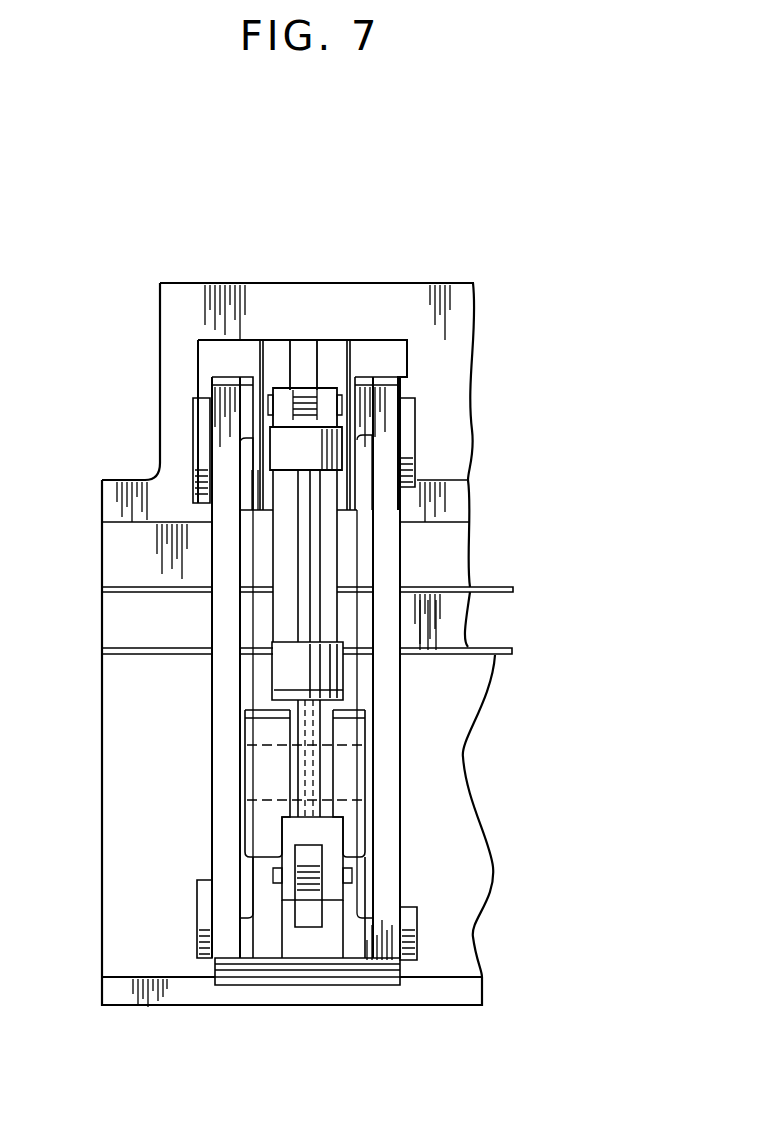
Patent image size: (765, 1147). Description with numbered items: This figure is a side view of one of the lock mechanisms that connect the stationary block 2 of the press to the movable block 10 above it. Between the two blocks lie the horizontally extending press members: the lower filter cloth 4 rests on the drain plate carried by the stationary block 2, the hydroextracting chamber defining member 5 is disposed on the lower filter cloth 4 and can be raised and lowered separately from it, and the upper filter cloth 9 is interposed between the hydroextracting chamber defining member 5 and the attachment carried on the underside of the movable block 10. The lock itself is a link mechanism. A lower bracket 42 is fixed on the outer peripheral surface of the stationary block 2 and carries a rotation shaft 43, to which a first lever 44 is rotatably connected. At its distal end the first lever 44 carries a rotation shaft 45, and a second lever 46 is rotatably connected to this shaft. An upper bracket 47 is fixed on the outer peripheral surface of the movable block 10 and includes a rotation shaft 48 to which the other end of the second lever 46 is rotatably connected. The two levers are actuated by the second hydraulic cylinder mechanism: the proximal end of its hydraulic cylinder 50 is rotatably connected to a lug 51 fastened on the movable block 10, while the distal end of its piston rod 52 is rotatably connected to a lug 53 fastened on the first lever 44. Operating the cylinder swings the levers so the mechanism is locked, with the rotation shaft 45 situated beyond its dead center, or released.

The stationary block 2 is at (460, 898).
The lower filter cloth 4 is at (498, 656).
The hydroextracting chamber defining member 5 is at (453, 608).
The upper filter cloth 9 is at (495, 585).
The movable block 10 is at (455, 300).
The lower bracket 42 is at (255, 825).
The rotation shaft 43 is at (355, 760).
The first lever 44 is at (312, 968).
The rotation shaft 45 is at (200, 925).
The second lever 46 is at (215, 680).
The upper bracket 47 is at (335, 345).
The rotation shaft 48 is at (415, 420).
The hydraulic cylinder 50 is at (290, 548).
The lug 51 is at (303, 350).
The piston rod 52 is at (300, 772).
The lug 53 is at (305, 930).